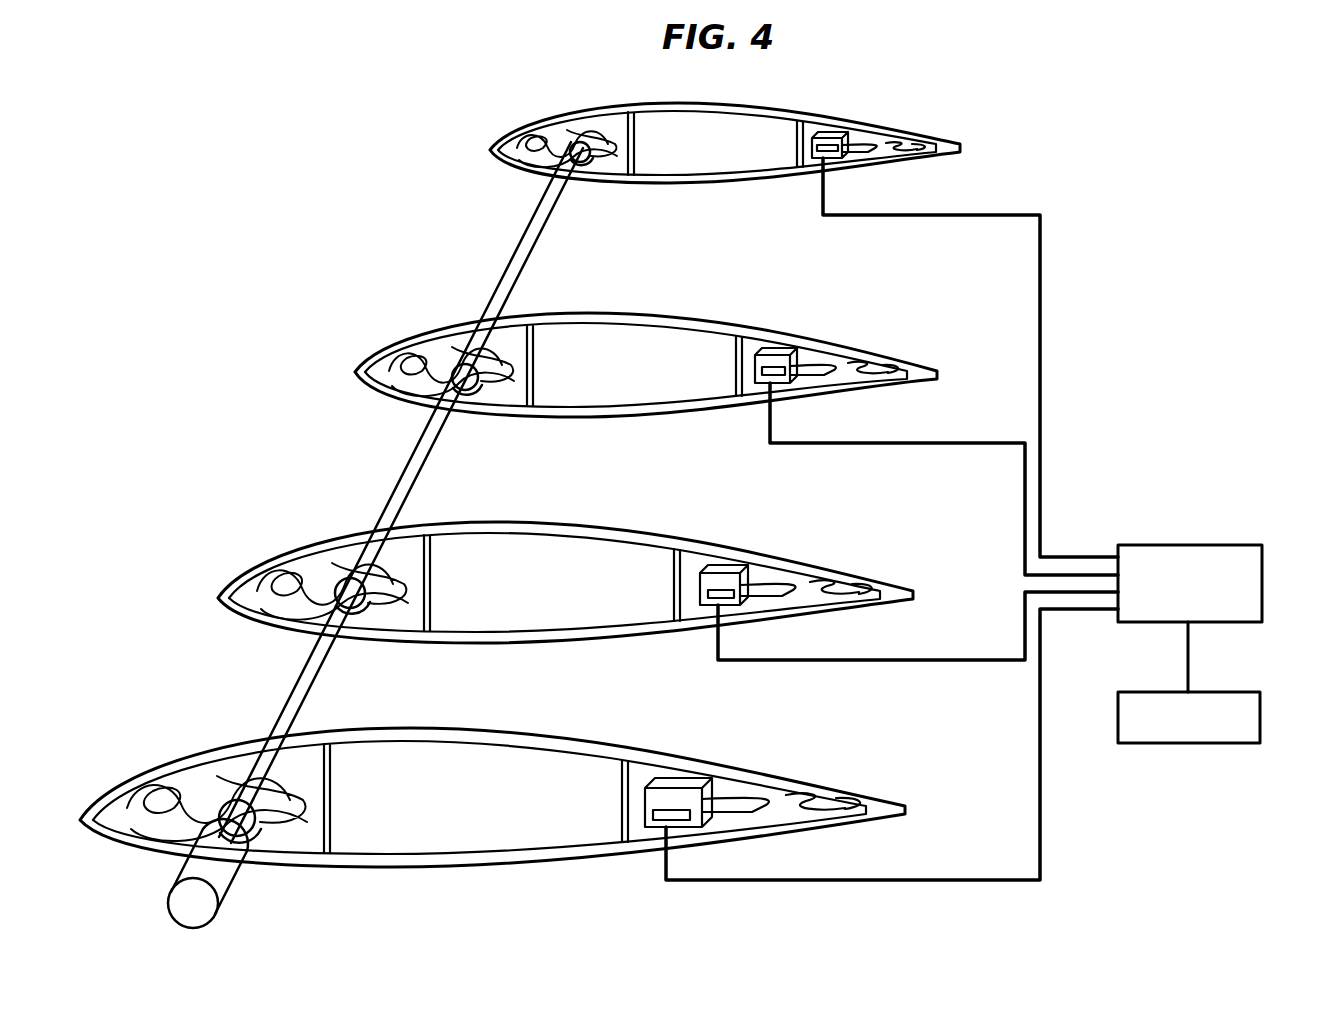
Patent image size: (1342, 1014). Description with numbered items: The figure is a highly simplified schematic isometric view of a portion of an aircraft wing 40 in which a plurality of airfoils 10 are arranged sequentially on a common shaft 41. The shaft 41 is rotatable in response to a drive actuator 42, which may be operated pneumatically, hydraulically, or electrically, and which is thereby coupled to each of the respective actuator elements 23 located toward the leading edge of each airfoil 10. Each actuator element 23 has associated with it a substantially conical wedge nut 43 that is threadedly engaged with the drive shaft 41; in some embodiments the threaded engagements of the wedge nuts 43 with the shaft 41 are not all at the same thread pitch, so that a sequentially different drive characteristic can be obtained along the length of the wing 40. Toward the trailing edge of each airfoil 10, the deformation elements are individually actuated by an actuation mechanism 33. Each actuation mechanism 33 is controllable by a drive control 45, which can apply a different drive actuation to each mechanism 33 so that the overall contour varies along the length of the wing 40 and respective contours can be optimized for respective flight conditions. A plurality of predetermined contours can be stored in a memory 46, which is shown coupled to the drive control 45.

The airfoil 10 is at (689, 159).
The actuator element 23 is at (480, 370).
The actuation mechanism 33 is at (828, 140).
The aircraft wing 40 is at (974, 483).
The shaft 41 is at (427, 466).
The drive actuator 42 is at (188, 874).
The wedge nut 43 is at (595, 168).
The drive control 45 is at (1264, 573).
The memory 46 is at (1262, 717).